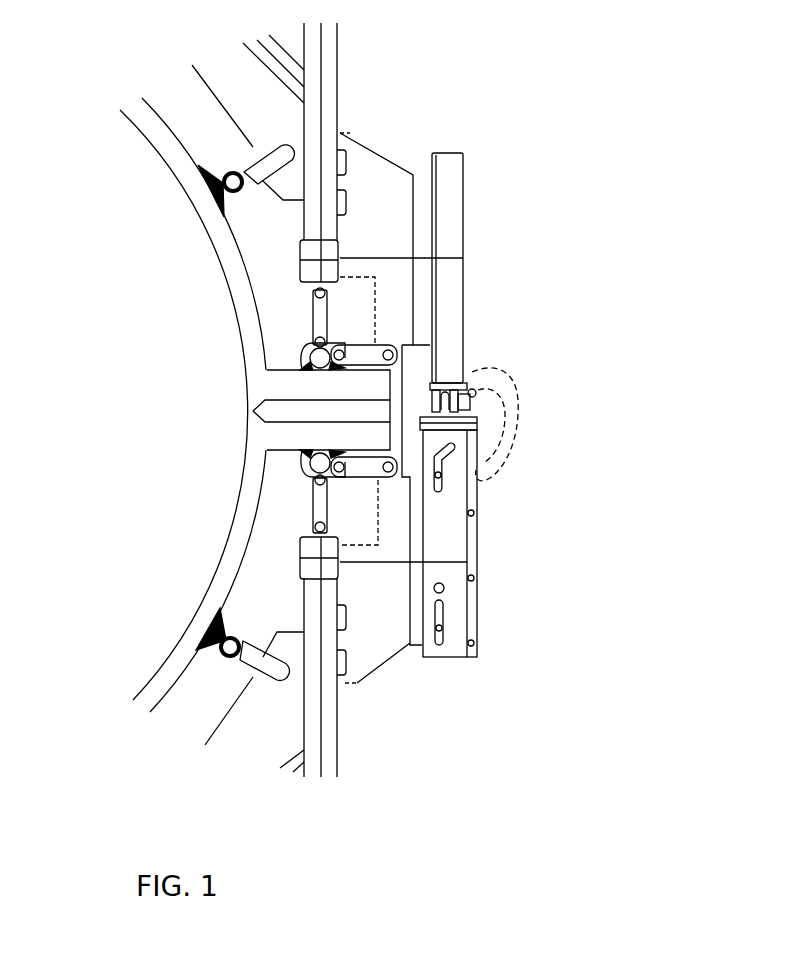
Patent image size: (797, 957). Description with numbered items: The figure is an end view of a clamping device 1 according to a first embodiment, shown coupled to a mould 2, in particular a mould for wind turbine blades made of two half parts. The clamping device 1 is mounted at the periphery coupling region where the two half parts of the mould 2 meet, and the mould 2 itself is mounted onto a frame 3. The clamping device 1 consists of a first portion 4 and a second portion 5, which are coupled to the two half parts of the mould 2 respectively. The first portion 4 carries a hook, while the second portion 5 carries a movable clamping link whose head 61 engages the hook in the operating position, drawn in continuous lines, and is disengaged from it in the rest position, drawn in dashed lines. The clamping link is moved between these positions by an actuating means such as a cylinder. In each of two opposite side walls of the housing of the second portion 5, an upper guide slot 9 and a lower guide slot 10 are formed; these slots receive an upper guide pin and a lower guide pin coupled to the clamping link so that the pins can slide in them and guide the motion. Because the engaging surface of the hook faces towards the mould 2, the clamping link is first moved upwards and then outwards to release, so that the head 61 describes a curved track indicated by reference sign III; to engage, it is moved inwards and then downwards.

The clamping device 1 is at (540, 397).
The mould 2 is at (250, 327).
The frame 3 is at (300, 242).
The first portion 4 is at (455, 335).
The second portion 5 is at (453, 532).
The upper guide slot 9 is at (445, 468).
The lower guide slot 10 is at (438, 617).
The head 61 is at (505, 430).
The curved track III is at (485, 383).